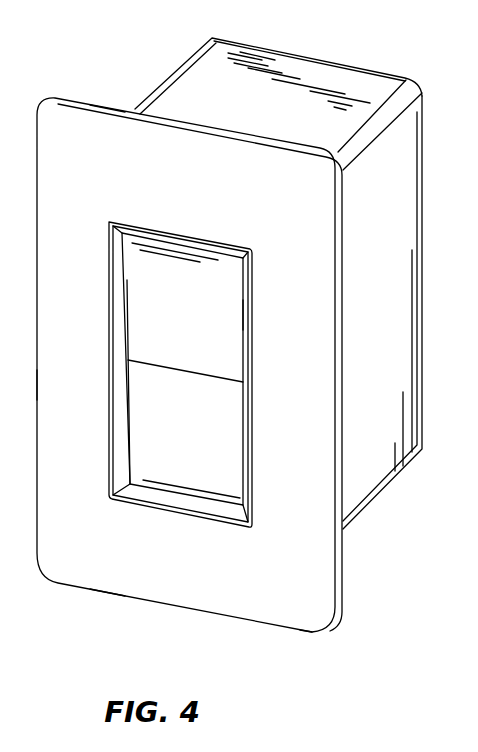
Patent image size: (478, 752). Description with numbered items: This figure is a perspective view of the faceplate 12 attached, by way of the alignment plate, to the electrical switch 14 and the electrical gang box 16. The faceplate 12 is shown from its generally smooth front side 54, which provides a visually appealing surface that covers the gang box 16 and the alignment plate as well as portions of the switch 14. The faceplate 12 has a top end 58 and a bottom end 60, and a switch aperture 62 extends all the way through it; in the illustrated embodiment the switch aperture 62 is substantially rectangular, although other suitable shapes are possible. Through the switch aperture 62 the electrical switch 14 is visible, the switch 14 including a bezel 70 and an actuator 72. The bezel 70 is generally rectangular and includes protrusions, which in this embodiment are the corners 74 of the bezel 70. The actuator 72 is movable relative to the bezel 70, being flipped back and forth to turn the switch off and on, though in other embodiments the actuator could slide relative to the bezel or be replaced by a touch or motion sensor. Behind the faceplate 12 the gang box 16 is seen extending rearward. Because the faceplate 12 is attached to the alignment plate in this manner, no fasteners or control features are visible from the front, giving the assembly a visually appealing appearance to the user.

The faceplate 12 is at (205, 168).
The electrical switch 14 is at (225, 445).
The electrical gang box 16 is at (407, 172).
The front side 54 is at (105, 570).
The top end 58 is at (107, 105).
The bottom end 60 is at (288, 630).
The switch aperture 62 is at (110, 382).
The bezel 70 is at (122, 460).
The actuator 72 is at (225, 310).
The corners of the bezel 74 is at (113, 222).